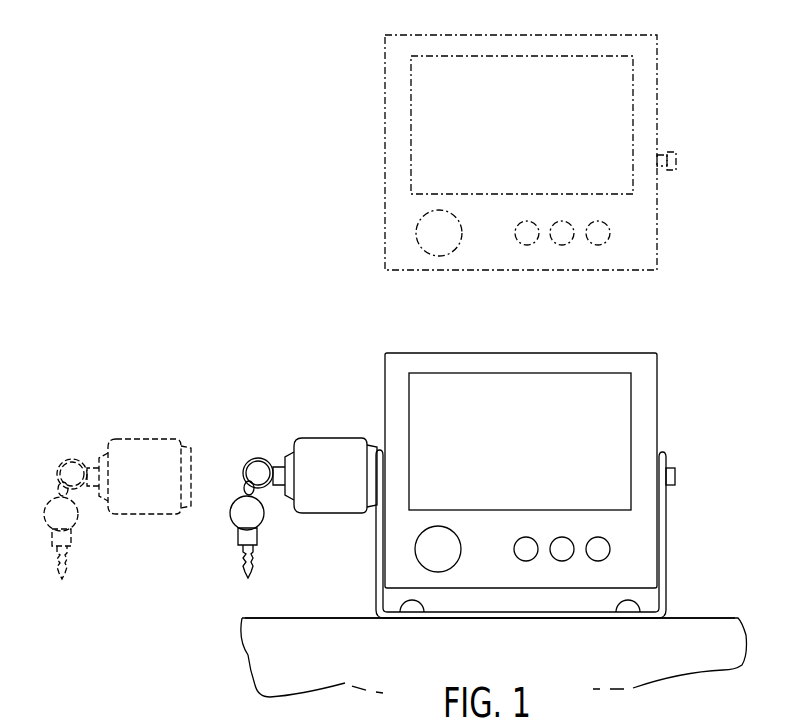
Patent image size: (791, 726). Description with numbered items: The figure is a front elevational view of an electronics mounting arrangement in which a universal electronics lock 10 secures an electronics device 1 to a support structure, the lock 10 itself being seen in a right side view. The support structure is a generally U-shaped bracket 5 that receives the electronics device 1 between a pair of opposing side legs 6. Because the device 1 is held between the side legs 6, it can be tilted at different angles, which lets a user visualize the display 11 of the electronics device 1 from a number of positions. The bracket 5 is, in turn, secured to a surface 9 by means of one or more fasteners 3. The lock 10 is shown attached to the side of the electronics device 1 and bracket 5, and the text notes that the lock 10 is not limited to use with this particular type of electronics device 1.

The electronics device 1 is at (648, 378).
The display 11 is at (590, 448).
The opposing side legs 6 is at (373, 537).
The fasteners 3 is at (395, 606).
The bracket 5 is at (490, 620).
The surface 9 is at (736, 638).
The universal electronics lock 10 is at (262, 408).